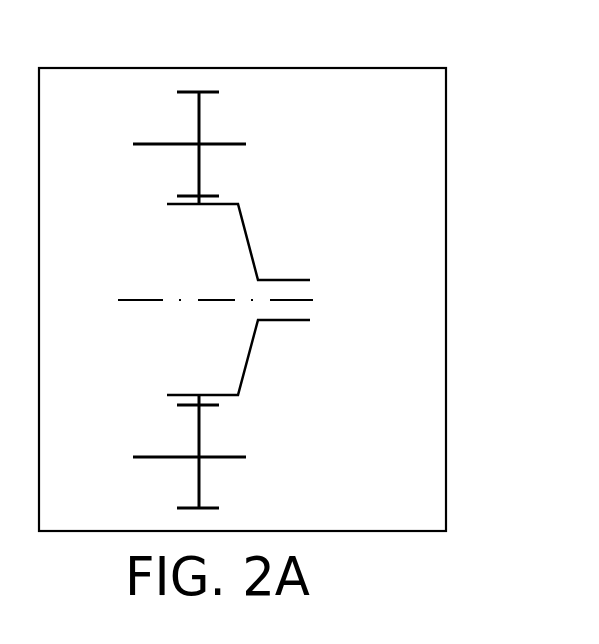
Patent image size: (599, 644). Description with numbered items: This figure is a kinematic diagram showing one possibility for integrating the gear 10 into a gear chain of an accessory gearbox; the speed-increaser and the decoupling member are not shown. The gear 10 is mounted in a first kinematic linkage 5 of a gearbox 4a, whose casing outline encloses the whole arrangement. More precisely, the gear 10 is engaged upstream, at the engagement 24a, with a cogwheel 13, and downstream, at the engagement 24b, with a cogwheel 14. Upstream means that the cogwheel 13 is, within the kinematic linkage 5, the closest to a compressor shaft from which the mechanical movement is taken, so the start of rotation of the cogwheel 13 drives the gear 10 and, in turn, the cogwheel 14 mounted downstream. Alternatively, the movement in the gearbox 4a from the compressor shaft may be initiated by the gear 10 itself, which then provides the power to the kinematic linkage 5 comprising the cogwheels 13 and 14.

The first kinematic linkage 5 is at (285, 86).
The gearbox 4a is at (446, 213).
The cogwheel 13 is at (200, 118).
The cogwheel 14 is at (200, 483).
The gear 10 is at (250, 240).
The upstream engagement 24a is at (208, 196).
The downstream engagement 24b is at (208, 405).